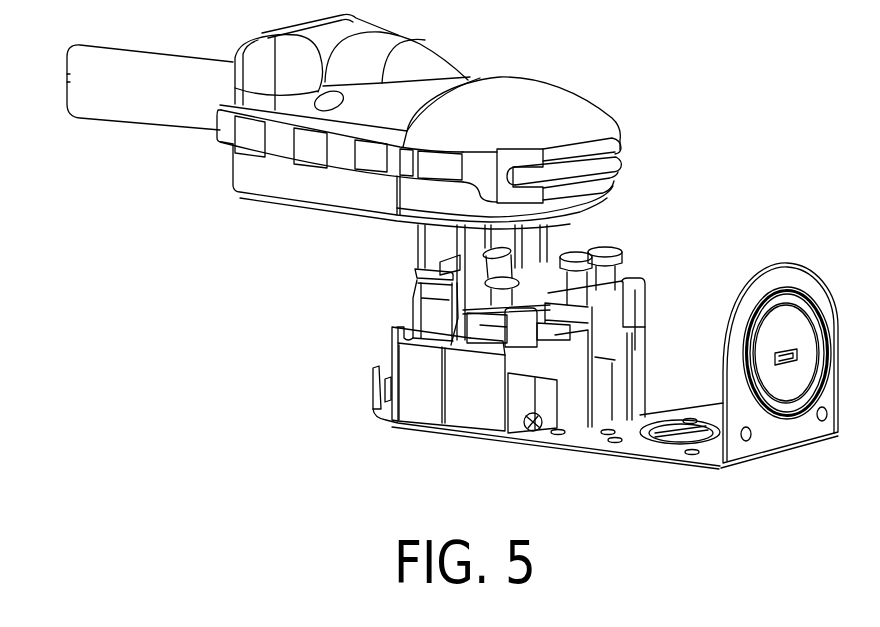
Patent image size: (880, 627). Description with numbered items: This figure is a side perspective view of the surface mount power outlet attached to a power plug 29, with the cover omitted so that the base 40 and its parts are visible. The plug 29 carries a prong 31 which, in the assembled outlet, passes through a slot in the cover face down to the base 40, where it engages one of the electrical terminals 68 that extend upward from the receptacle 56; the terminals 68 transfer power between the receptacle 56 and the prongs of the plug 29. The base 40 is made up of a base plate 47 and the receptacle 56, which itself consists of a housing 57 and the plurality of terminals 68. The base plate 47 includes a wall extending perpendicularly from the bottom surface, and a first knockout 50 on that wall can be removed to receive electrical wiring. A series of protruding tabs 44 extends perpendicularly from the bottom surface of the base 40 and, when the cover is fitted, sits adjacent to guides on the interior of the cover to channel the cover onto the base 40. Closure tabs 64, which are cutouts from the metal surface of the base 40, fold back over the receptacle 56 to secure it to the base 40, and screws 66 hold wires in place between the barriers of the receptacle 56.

The plug 29 is at (546, 72).
The prong 31 is at (540, 233).
The base 40 is at (677, 358).
The protruding tabs 44 is at (376, 391).
The base plate 47 is at (608, 470).
The first knockout 50 is at (803, 345).
The receptacle 56 is at (485, 411).
The housing 57 is at (418, 406).
The closure tabs 64 is at (530, 431).
The screws 66 is at (588, 250).
The terminals 68 is at (418, 251).